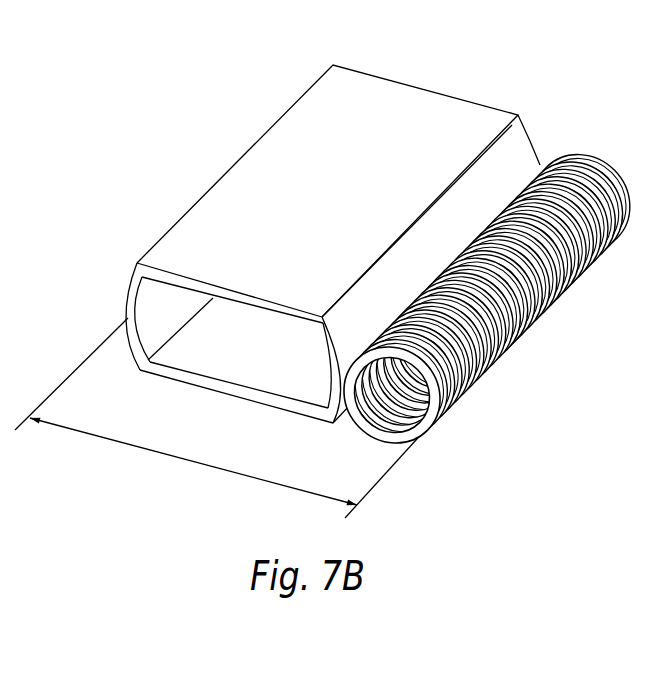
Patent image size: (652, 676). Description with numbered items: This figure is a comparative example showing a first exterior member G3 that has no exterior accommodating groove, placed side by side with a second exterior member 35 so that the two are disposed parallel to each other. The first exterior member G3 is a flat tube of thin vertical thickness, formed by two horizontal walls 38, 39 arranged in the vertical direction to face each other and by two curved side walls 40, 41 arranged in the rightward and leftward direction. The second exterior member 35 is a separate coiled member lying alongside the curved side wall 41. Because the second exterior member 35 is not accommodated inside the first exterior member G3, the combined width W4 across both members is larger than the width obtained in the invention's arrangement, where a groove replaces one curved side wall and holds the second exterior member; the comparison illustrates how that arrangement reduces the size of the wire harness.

The first exterior member G3 is at (316, 232).
The second exterior member 35 is at (578, 152).
The horizontal wall 38 is at (202, 284).
The horizontal wall 39 is at (255, 401).
The curved side wall 40 is at (128, 290).
The curved side wall 41 is at (330, 343).
The width W4 is at (220, 418).